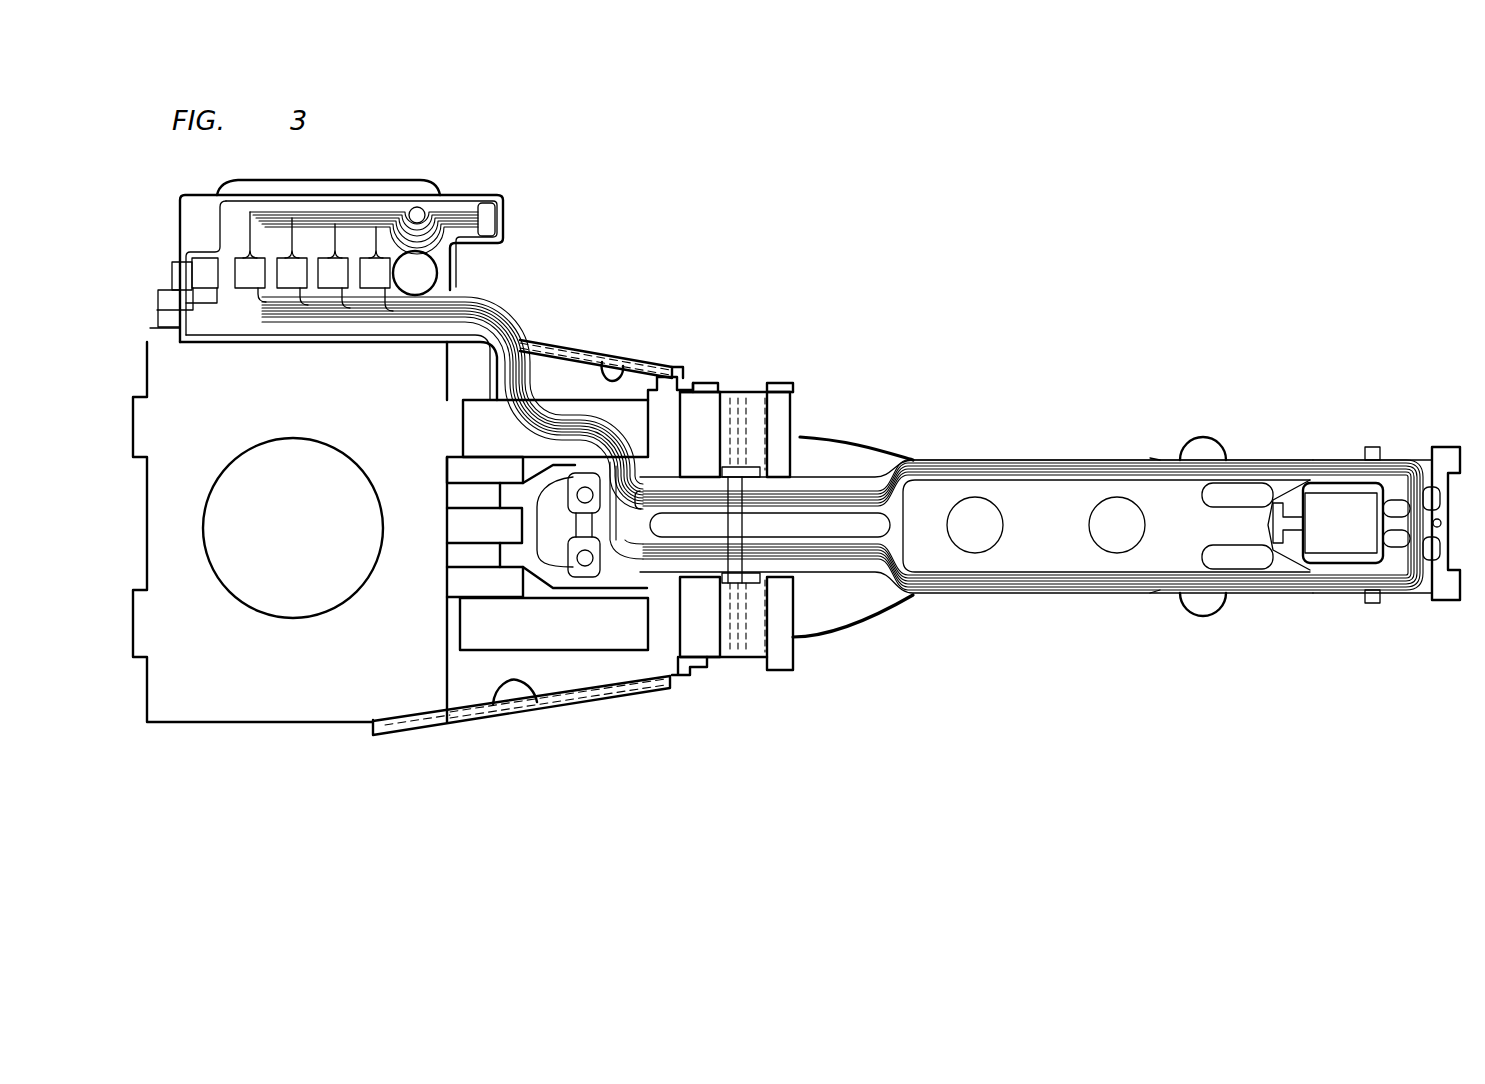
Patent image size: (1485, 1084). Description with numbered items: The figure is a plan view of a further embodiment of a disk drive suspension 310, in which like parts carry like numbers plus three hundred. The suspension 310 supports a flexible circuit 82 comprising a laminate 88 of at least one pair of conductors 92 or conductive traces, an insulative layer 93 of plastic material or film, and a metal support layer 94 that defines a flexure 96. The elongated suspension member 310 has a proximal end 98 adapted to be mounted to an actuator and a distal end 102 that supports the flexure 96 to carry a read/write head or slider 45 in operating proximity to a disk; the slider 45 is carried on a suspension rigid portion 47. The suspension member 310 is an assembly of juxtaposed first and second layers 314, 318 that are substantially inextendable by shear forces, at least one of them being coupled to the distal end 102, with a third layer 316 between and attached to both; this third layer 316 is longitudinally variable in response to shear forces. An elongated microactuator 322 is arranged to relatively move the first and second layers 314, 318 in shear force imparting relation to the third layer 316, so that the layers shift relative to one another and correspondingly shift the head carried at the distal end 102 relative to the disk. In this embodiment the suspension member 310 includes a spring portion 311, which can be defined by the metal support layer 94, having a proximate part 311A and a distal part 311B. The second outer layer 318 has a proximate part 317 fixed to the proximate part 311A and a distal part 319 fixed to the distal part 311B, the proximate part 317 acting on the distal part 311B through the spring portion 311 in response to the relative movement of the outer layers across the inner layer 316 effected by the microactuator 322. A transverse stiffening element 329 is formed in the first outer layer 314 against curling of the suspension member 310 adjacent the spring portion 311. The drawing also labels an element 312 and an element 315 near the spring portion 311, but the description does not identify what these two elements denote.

The proximal end 98 is at (258, 693).
The flexible circuit 82 is at (985, 467).
The microactuator 322 is at (477, 628).
The laminate 88 is at (1065, 597).
The conductors 92 is at (1102, 470).
The distal part of second outer layer 319 is at (815, 442).
The insulative layer 93 is at (853, 565).
The disk drive suspension 310 is at (784, 712).
The outer bearing plate 312 is at (712, 336).
The spring portion 311 is at (795, 408).
The proximate part of spring portion 311A is at (730, 655).
The distal part of spring portion 311B is at (755, 633).
The transverse stiffening element 329 is at (735, 410).
The bearing races 315 is at (753, 420).
The proximate part of second outer layer 317 is at (698, 673).
The first layer 314 is at (445, 727).
The third layer 316 is at (580, 700).
The second layer 318 is at (530, 703).
The slider 45 is at (1345, 495).
The flexure 96 is at (1355, 567).
The support layer 94 is at (1437, 580).
The distal end 102 is at (1410, 419).
The suspension rigid portion 47 is at (1157, 629).